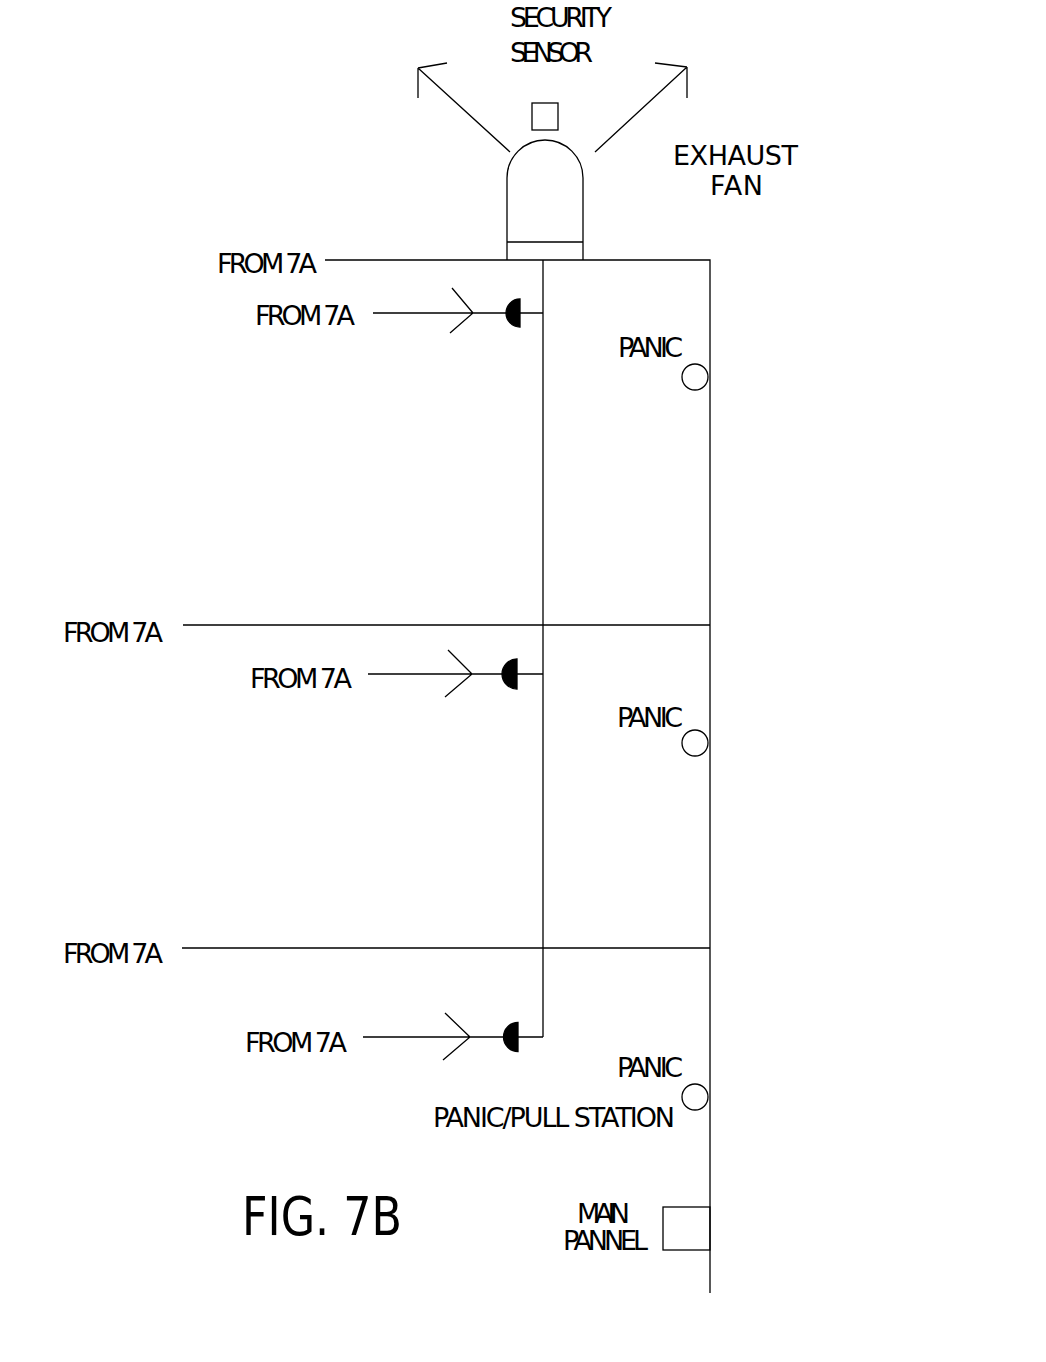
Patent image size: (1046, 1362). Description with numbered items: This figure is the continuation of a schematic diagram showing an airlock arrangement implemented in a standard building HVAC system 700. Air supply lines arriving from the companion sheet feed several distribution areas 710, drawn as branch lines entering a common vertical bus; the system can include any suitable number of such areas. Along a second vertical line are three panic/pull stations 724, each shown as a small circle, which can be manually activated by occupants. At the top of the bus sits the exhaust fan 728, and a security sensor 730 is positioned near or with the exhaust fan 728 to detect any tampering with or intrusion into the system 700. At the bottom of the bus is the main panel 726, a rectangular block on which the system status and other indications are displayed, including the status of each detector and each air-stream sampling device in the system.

The building HVAC system 700 is at (382, 258).
The distribution area 710 is at (462, 323).
The panic/pull station 724 is at (680, 380).
The main panel 726 is at (695, 1227).
The exhaust fan 728 is at (583, 210).
The security sensor 730 is at (552, 107).